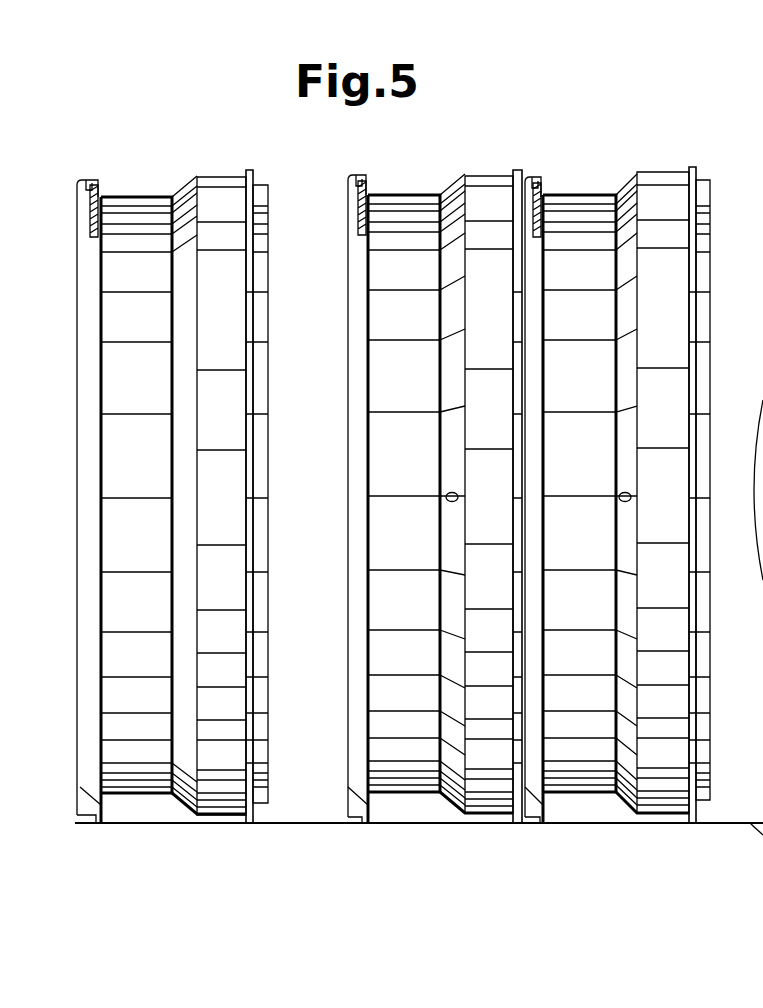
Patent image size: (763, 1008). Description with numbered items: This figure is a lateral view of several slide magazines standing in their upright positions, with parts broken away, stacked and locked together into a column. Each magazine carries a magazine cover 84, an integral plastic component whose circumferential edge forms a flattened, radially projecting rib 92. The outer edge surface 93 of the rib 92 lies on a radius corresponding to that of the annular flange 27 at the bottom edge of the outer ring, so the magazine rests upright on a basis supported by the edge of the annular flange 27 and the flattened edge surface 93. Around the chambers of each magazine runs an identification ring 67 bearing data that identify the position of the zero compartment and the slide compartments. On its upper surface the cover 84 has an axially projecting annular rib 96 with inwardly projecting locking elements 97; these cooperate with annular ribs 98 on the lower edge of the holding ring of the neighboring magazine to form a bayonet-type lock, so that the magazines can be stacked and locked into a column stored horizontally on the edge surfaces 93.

The magazine cover 84 is at (88, 272).
The identification ring 67 is at (180, 242).
The locking elements 97 is at (78, 188).
The annular rib 96 is at (96, 185).
The annular ribs 98 is at (262, 186).
The edge surface 93 is at (100, 813).
The radially projecting rib 92 is at (105, 808).
The annular flange 27 is at (253, 823).